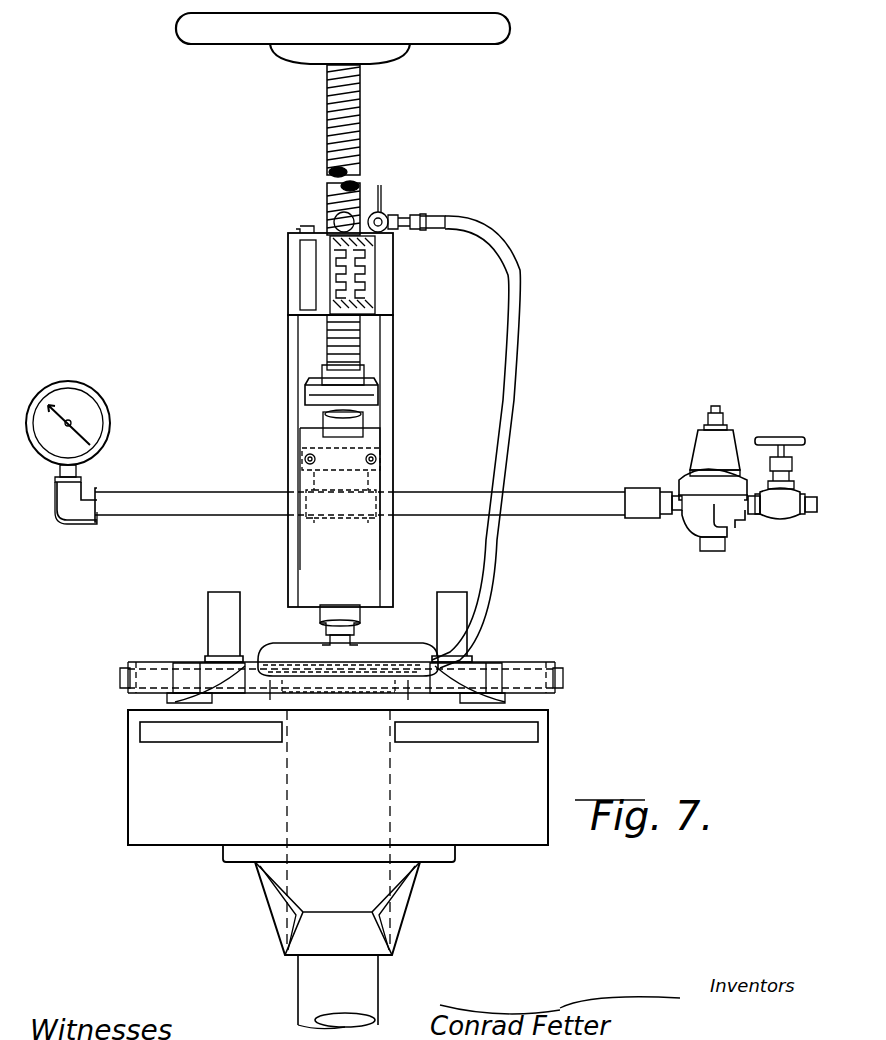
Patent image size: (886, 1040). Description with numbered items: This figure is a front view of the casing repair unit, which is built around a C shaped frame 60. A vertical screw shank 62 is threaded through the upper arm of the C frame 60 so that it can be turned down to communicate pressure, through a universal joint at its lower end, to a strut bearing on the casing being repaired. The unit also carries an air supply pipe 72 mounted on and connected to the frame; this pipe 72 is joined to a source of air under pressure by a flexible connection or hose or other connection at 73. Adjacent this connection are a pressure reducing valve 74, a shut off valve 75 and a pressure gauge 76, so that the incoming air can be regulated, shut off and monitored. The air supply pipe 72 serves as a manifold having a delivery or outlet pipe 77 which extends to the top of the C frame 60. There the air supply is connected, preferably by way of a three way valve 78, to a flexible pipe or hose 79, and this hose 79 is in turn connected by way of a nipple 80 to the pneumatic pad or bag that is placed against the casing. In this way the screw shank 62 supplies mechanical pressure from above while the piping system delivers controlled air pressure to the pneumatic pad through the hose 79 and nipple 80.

The C shaped frame 60 is at (380, 405).
The vertical screw shank 62 is at (352, 120).
The air supply pipe 72 is at (188, 492).
The connection to source of air under pressure 73 is at (812, 510).
The pressure reducing valve 74 is at (702, 455).
The shut off valve 75 is at (770, 440).
The pressure gauge 76 is at (150, 410).
The delivery or outlet pipe 77 is at (333, 432).
The three way valve 78 is at (380, 215).
The flexible pipe or hose 79 is at (510, 262).
The nipple 80 is at (390, 662).